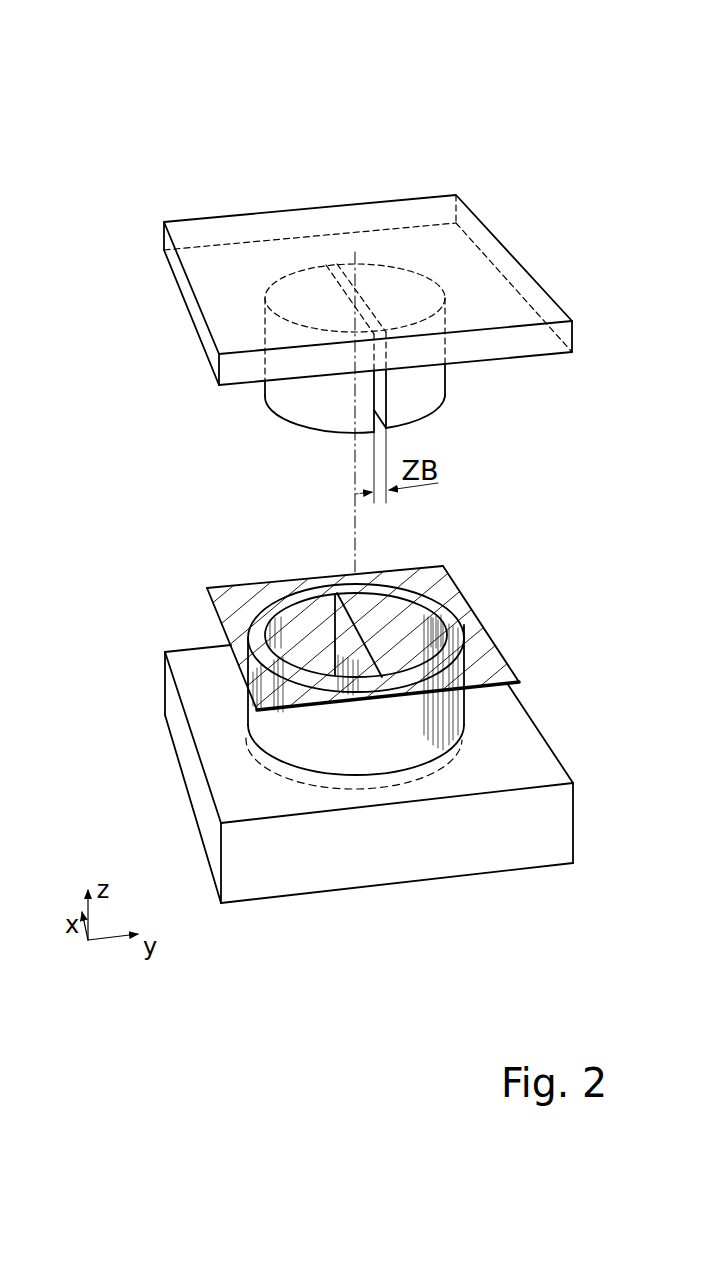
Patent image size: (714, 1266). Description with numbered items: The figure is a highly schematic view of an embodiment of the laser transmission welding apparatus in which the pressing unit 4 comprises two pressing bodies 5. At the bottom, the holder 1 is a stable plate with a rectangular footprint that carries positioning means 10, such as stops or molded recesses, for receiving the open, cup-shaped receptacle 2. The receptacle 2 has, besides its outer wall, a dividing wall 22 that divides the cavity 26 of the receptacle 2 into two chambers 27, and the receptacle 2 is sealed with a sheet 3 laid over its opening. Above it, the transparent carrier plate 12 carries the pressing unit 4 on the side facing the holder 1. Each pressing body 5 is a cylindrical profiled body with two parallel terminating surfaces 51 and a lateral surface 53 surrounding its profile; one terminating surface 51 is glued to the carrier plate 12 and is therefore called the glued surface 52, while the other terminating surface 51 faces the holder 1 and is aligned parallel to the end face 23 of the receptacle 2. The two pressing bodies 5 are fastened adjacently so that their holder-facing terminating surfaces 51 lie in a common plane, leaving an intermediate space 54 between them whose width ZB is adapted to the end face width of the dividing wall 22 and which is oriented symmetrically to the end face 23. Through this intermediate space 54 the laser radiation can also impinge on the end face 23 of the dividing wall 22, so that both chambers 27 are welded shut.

The holder 1 is at (334, 759).
The receptacle 2 is at (262, 758).
The plate 3 is at (392, 643).
The pressing unit 4 is at (353, 43).
The pressing body 5 is at (271, 286).
The positioning means 10 is at (433, 768).
The carrier plate 12 is at (190, 227).
The dividing wall 22 is at (343, 633).
The end face 23 is at (335, 593).
The cavity 26 is at (395, 618).
The chamber 27 is at (465, 584).
The terminating surface 51 is at (326, 440).
The glued surface 52 is at (292, 302).
The lateral surface 53 is at (370, 402).
The intermediate space 54 is at (343, 273).